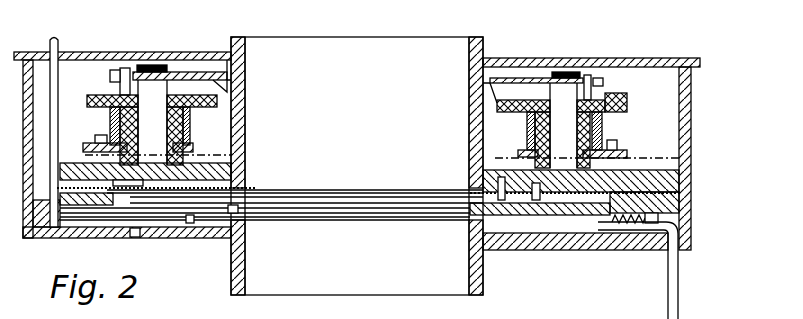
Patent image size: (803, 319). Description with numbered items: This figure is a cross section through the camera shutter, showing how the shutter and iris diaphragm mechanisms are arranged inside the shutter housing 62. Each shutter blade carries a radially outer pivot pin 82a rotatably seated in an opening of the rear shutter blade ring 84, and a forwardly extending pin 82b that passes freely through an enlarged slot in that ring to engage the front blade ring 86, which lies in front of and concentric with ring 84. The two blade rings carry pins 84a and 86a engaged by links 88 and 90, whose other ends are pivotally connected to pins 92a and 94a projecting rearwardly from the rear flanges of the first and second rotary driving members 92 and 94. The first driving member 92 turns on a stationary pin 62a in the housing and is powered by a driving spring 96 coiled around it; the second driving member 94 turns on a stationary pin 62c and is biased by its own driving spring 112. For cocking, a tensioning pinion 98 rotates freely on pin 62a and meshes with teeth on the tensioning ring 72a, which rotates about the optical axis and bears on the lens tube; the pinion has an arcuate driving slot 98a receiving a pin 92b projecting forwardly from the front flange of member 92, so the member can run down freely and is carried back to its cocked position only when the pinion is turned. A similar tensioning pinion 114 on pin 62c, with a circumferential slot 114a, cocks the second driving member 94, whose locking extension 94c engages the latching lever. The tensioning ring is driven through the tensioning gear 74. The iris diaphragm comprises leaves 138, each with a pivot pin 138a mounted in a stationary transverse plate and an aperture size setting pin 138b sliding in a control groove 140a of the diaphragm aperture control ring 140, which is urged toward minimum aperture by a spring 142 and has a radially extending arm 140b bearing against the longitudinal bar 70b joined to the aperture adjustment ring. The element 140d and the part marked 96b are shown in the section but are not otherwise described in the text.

The shutter housing 62 is at (684, 140).
The stationary pin 62a is at (155, 72).
The stationary pin 62c is at (561, 72).
The longitudinal bar 70b is at (50, 40).
The tensioning ring 72a is at (207, 74).
The tensioning gear 74 is at (660, 58).
The radially outer pivot pin 82a is at (538, 201).
The forwardly extending pin 82b is at (503, 201).
The rear shutter blade ring 84 is at (486, 184).
The pin 84a is at (247, 156).
The front blade ring 86 is at (222, 180).
The pin 86a is at (472, 157).
The link 88 is at (205, 164).
The link 90 is at (490, 168).
The first driving member 92 is at (212, 101).
The pin 92a is at (99, 135).
The pin 92b is at (126, 68).
The second driving member 94 is at (497, 105).
The pin 94a is at (618, 142).
The locking extension 94c is at (627, 96).
The driving spring 96 is at (195, 119).
The bolt 96b is at (588, 75).
The tensioning pinion 98 is at (108, 77).
The arcuate driving slot 98a is at (138, 68).
The driving spring 112 is at (527, 120).
The tensioning pinion 114 is at (535, 78).
The circumferential slot 114a is at (600, 78).
The diaphragm leaf 138 is at (245, 214).
The pivot pin 138a is at (229, 214).
The aperture size setting pin 138b is at (141, 233).
The diaphragm aperture control ring 140 is at (240, 222).
The control groove 140a is at (187, 223).
The radially extending arm 140b is at (40, 238).
The tube outlet 140d is at (666, 305).
The spring 142 is at (630, 225).